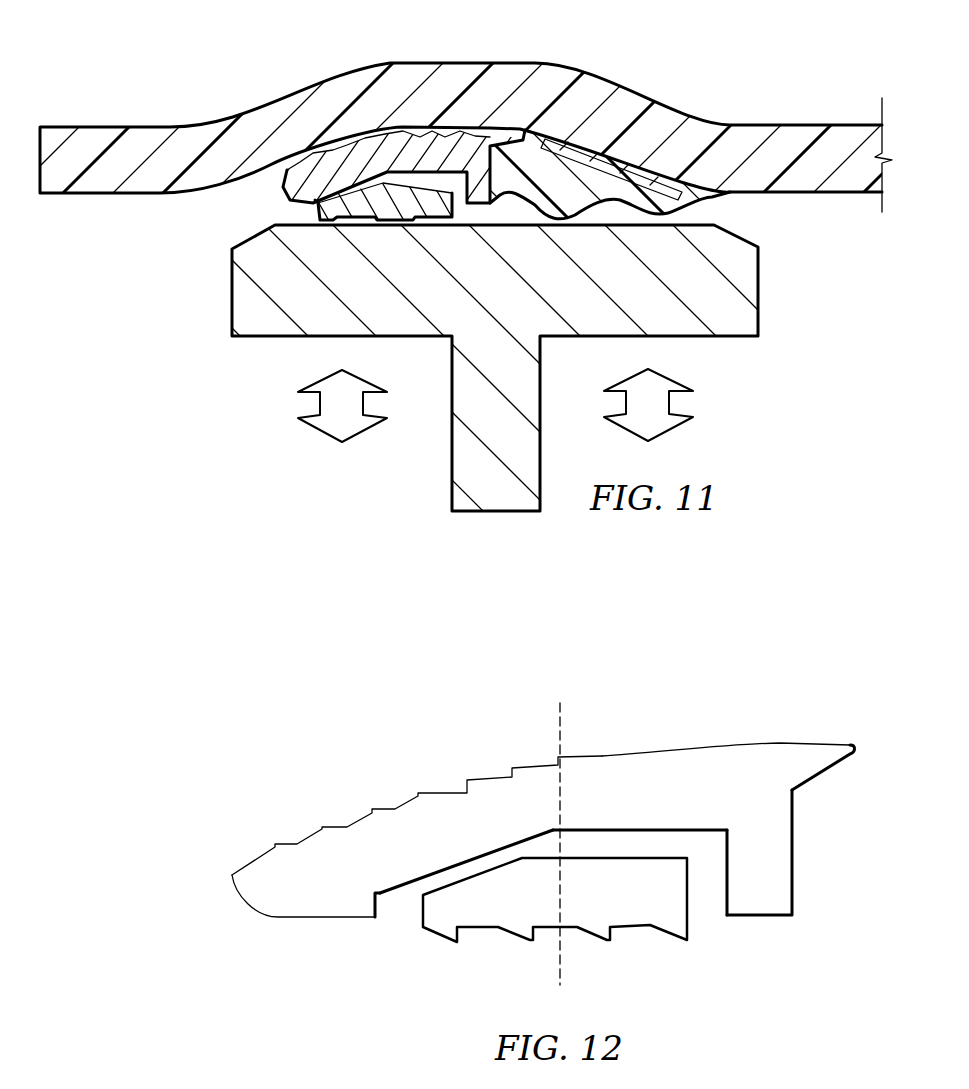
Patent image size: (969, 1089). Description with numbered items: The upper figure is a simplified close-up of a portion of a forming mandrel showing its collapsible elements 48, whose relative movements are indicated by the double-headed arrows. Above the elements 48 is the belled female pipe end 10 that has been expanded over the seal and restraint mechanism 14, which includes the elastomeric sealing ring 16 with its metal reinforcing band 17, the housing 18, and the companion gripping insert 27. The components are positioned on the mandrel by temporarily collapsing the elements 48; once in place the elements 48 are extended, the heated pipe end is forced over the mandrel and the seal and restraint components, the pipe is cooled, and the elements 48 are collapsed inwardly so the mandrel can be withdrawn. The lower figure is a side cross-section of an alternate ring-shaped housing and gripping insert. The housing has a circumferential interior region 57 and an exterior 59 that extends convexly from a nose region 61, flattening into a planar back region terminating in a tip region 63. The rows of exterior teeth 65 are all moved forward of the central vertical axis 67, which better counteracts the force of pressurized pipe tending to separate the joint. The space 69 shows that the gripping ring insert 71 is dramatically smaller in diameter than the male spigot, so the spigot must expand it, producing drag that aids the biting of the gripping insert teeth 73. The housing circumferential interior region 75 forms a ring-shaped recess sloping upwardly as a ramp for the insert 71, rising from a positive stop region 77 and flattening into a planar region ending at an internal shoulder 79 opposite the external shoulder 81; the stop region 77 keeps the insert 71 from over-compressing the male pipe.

In FIG. 11, the belled female pipe end 10 is at (166, 114).
In FIG. 11, the seal and restraint mechanism 14 is at (448, 88).
In FIG. 11, the sealing ring 16 is at (544, 156).
In FIG. 11, the metal reinforcing band 17 is at (654, 180).
In FIG. 11, the housing 18 is at (297, 194).
In FIG. 11, the gripping insert 27 is at (383, 190).
In FIG. 11, the collapsible elements 48 is at (232, 272).
In FIG. 12, the circumferential interior region 57 is at (639, 832).
In FIG. 12, the exterior 59 is at (653, 748).
In FIG. 12, the nose region 61 is at (232, 875).
In FIG. 12, the tip region 63 is at (853, 749).
In FIG. 12, the exterior teeth 65 is at (372, 810).
In FIG. 12, the central vertical axis 67 is at (560, 712).
In FIG. 12, the space 69 is at (464, 863).
In FIG. 12, the gripping ring insert 71 is at (518, 953).
In FIG. 12, the gripping insert teeth 73 is at (617, 938).
In FIG. 12, the housing circumferential interior region 75 is at (398, 900).
In FIG. 12, the positive stop region 77 is at (380, 910).
In FIG. 12, the internal shoulder 79 is at (727, 898).
In FIG. 12, the external shoulder 81 is at (793, 865).